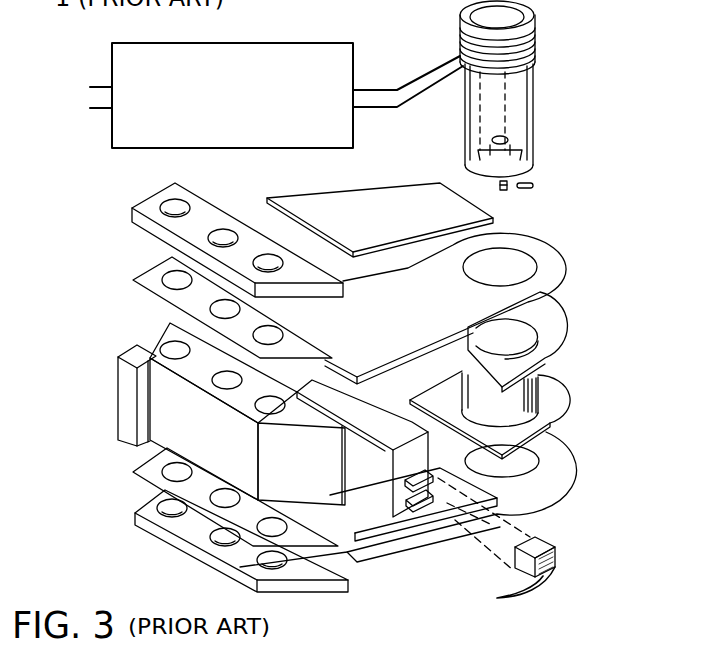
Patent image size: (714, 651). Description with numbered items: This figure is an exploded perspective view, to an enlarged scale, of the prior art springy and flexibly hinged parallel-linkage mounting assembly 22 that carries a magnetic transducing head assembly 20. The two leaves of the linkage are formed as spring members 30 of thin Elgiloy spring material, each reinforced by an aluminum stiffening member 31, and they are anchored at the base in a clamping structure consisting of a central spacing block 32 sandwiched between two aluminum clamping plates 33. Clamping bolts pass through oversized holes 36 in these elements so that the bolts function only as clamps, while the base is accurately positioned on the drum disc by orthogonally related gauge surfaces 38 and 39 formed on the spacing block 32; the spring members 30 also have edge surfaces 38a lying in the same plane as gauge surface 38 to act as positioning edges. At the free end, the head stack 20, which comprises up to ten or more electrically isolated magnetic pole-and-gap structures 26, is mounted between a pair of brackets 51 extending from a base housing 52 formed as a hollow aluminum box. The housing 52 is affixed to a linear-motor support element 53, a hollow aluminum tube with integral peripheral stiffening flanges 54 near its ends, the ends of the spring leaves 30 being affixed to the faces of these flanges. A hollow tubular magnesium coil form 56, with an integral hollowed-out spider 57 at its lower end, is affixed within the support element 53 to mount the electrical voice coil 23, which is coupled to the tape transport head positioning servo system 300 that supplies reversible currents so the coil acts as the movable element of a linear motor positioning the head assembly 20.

The tape transport head positioning servo system 300 is at (342, 50).
The electrical voice coil 23 is at (540, 33).
The coil form 56 is at (537, 97).
The spider 57 is at (525, 160).
The clamping plates 33 is at (152, 197).
The holes 36 is at (178, 205).
The edge surfaces 38a is at (162, 298).
The gauge surface 38 is at (185, 417).
The gauge surface 39 is at (143, 416).
The central spacing block 32 is at (320, 476).
The base housing 52 is at (407, 443).
The brackets 51 is at (403, 483).
The spring members 30 is at (417, 321).
The stiffening members 31 is at (398, 222).
The peripheral stiffening flanges 54 is at (568, 325).
The linear-motor support element 53 is at (497, 412).
The magnetic transducing head assembly 20 is at (557, 557).
The magnetic pole-and-gap structures 26 is at (507, 590).
The parallel-linkage mounting assembly 22 is at (100, 348).